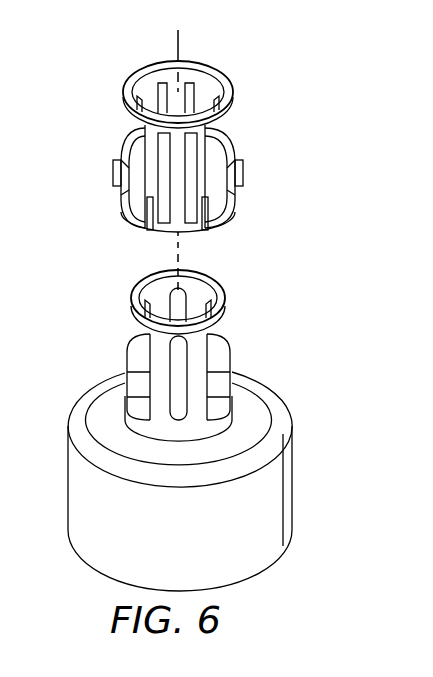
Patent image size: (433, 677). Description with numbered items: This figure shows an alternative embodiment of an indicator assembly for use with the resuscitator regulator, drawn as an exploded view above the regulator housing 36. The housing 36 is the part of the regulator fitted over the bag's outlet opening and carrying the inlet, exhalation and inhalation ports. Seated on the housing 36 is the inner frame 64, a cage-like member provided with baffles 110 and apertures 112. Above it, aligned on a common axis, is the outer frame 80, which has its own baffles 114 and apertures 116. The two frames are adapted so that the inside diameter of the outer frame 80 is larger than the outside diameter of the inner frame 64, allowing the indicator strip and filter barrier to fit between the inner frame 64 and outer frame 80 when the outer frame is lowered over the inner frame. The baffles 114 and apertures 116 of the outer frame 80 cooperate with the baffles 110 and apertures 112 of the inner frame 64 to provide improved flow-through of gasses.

The housing 36 is at (67, 470).
The inner frame 64 is at (133, 356).
The outer frame 80 is at (126, 100).
The baffles 110 is at (220, 346).
The apertures 112 is at (172, 290).
The baffles 114 is at (122, 152).
The apertures 116 is at (165, 87).